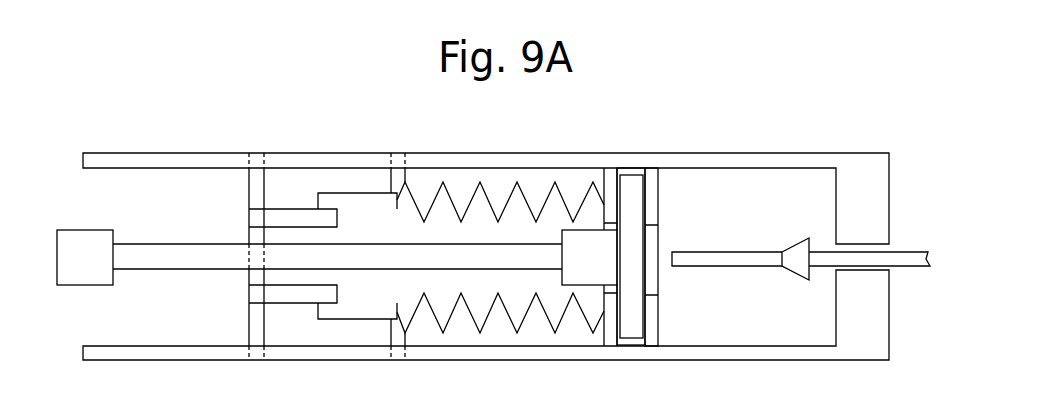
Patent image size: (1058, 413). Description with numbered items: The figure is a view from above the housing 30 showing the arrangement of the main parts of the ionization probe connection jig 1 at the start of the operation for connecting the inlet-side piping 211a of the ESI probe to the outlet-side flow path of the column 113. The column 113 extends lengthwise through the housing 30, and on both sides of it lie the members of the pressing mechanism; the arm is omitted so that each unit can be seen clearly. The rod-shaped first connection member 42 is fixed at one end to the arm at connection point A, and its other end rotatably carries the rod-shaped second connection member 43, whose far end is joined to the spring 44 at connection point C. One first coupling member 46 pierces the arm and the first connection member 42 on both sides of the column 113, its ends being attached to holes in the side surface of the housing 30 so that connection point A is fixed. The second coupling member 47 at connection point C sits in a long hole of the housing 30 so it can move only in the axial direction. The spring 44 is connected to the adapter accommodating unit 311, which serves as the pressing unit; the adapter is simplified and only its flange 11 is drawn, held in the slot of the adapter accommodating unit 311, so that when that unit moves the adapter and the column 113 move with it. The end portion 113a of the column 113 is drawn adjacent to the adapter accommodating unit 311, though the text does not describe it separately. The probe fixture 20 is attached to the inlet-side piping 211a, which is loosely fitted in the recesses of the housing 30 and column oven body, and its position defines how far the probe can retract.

The ionization probe connection jig 1 is at (746, 134).
The flange 11 is at (630, 175).
The probe fixture 20 is at (790, 272).
The housing 30 is at (362, 154).
The first connection member 42 is at (338, 222).
The second connection member 43 is at (318, 203).
The spring 44 is at (487, 183).
The first coupling member 46 is at (247, 189).
The second coupling member 47 is at (407, 163).
The column 113 is at (167, 243).
The rod head 113a is at (602, 287).
The inlet-side piping 211a is at (712, 268).
The adapter accommodating unit 311 is at (608, 183).